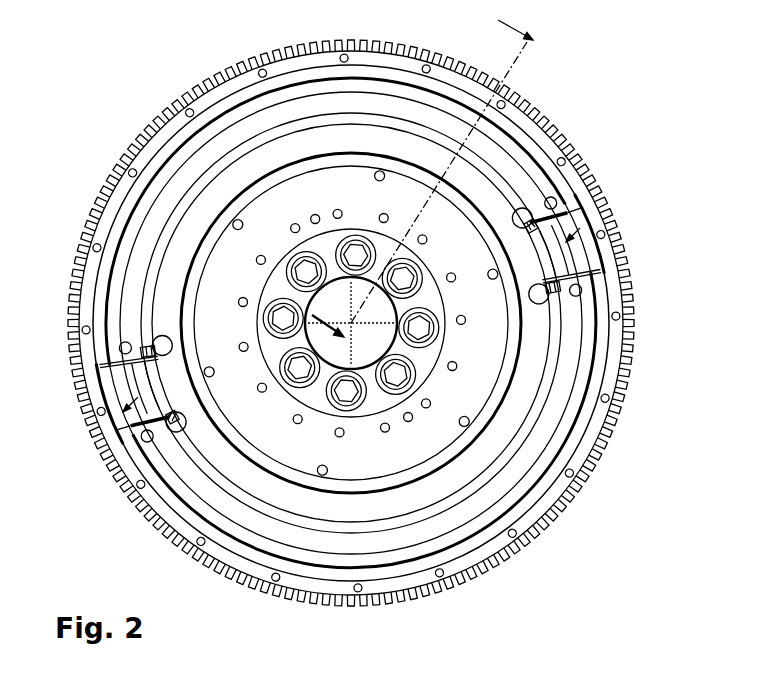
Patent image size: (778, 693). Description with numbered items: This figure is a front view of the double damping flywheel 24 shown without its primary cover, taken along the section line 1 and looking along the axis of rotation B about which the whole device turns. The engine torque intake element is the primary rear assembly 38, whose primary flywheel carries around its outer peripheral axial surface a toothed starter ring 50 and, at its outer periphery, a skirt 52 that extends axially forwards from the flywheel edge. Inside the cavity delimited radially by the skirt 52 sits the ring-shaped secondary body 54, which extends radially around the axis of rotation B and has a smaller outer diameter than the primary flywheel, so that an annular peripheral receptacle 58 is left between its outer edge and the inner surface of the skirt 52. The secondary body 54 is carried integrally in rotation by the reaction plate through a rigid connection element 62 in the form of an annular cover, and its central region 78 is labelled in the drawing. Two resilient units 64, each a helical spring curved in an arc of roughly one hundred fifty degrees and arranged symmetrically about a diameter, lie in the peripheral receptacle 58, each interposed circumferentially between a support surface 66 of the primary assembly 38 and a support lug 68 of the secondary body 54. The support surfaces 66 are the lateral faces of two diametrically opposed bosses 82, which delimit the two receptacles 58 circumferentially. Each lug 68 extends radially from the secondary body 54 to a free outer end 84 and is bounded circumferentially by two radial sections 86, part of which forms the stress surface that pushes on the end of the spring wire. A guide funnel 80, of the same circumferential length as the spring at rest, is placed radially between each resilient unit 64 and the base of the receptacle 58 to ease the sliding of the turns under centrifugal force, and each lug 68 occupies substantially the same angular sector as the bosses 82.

The section line I-I 1 is at (422, 169).
The double damping flywheel 24 is at (146, 77).
The primary rear assembly 38 is at (420, 610).
The toothed starter ring 50 is at (624, 363).
The skirt 52 is at (624, 331).
The secondary body 54 is at (458, 476).
The annular peripheral receptacle 58 is at (578, 433).
The rigid connection element 62 is at (625, 294).
The resilient unit 64 is at (257, 122).
The support surface 66 is at (553, 206).
The support lug 68 is at (590, 232).
The secondary flange 78 is at (328, 510).
The guide funnel 80 is at (612, 383).
The boss 82 is at (592, 277).
The free outer end 84 is at (602, 262).
The radial section 86 is at (563, 222).
The axis of rotation B is at (353, 326).